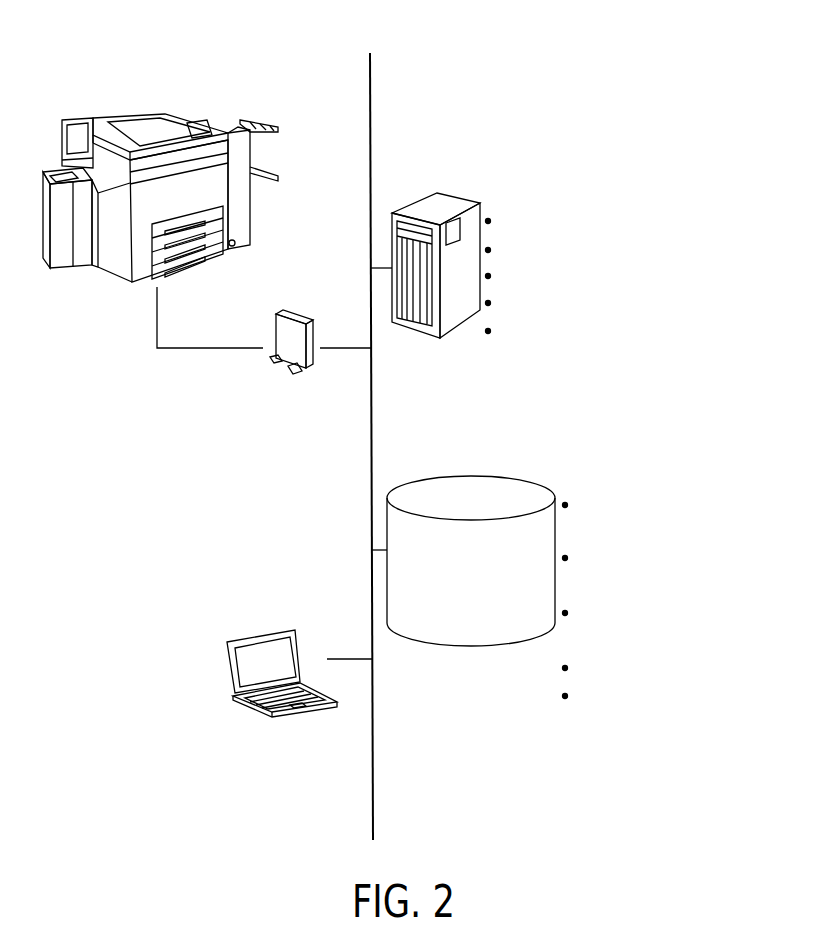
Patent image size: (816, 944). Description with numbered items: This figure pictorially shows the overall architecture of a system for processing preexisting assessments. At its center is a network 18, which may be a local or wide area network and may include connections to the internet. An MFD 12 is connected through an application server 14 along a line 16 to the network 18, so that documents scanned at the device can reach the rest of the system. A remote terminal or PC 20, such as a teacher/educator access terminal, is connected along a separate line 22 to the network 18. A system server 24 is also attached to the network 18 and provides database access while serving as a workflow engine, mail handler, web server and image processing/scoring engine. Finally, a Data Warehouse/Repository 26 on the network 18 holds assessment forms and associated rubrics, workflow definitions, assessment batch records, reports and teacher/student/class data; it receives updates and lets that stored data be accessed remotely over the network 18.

The MFD 12 is at (70, 268).
The application server 14 is at (288, 312).
The line 16 is at (332, 346).
The network 18 is at (370, 90).
The remote terminal or PC 20 is at (258, 635).
The line 22 is at (343, 660).
The system server 24 is at (482, 203).
The Data Warehouse/Repository 26 is at (470, 647).